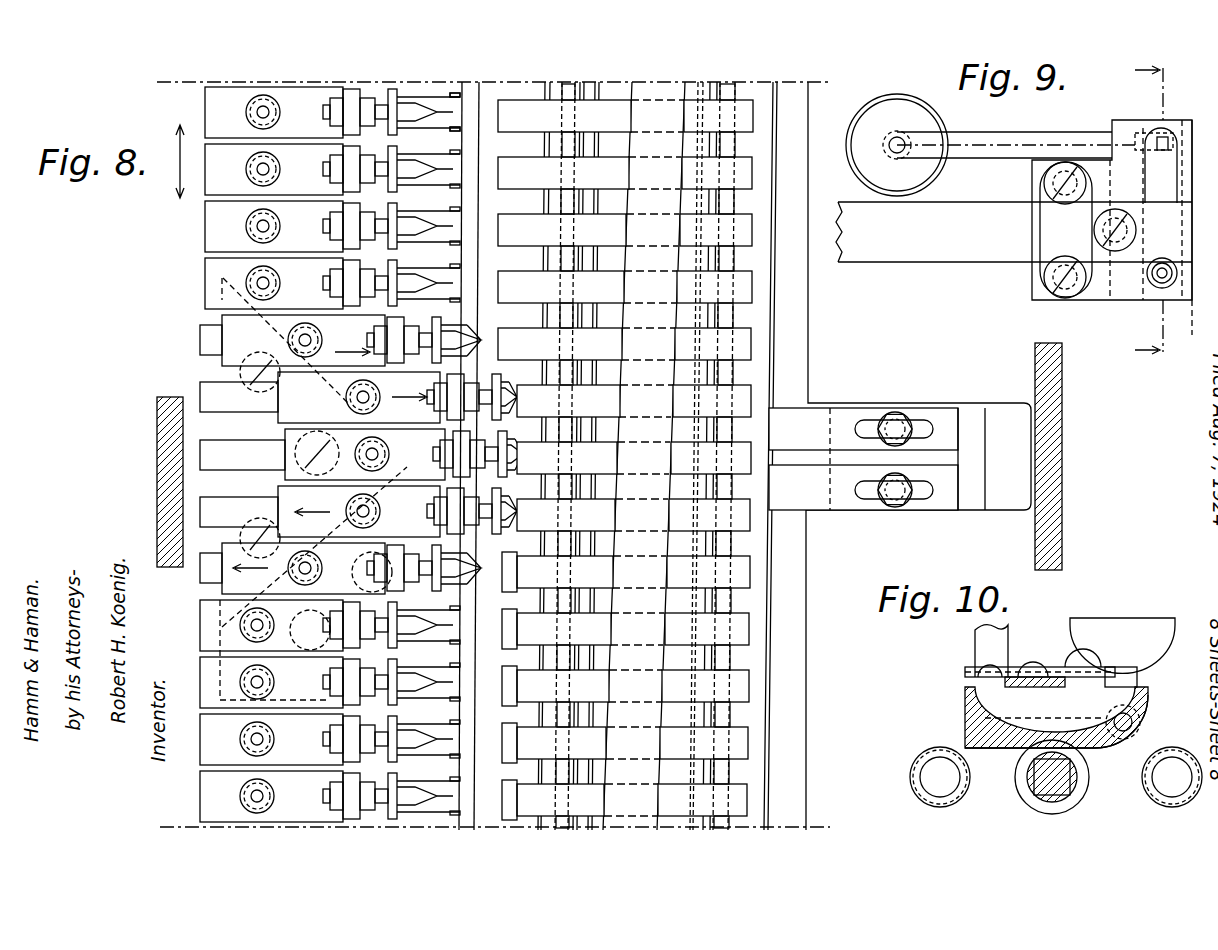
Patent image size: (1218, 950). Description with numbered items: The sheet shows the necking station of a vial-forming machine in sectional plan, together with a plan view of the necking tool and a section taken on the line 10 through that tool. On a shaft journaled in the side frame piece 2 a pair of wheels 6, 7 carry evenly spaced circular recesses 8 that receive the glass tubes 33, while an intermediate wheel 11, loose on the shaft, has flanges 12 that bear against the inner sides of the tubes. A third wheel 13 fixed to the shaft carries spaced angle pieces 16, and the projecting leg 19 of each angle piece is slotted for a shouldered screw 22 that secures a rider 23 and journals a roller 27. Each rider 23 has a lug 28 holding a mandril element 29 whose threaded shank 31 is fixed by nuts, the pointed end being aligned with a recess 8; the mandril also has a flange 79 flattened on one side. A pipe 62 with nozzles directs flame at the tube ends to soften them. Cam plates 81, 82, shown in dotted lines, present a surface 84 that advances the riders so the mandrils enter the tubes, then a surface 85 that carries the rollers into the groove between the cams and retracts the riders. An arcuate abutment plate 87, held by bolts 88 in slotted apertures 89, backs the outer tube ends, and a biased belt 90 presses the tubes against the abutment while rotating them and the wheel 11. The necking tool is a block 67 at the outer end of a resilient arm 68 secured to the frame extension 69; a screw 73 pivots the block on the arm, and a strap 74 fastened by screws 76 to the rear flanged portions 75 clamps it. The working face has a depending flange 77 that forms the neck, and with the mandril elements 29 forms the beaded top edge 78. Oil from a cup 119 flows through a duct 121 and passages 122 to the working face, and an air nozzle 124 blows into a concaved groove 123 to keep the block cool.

In FIG. 8, the side frame piece 2 is at (1035, 390).
In FIG. 8, the wheel 6 is at (760, 90).
In FIG. 8, the wheel 7 is at (582, 88).
In FIG. 8, the circular recess 8 is at (567, 250).
In FIG. 9, the section line 10 is at (1135, 208).
In FIG. 8, the intermediate wheel 11 is at (665, 812).
In FIG. 8, the flange 12 is at (620, 88).
In FIG. 8, the third wheel 13 is at (465, 88).
In FIG. 8, the angle piece 16 is at (450, 135).
In FIG. 8, the projecting leg 19 is at (410, 97).
In FIG. 10, the projecting leg 19 is at (1045, 810).
In FIG. 8, the shouldered screw 22 is at (266, 110).
In FIG. 8, the rider 23 is at (205, 113).
In FIG. 8, the roller 27 is at (235, 796).
In FIG. 8, the lug 28 is at (352, 187).
In FIG. 8, the mandril element 29 is at (425, 226).
In FIG. 10, the mandril element 29 is at (1035, 790).
In FIG. 8, the shank 31 is at (325, 170).
In FIG. 8, the glass tube 33 is at (625, 458).
In FIG. 10, the glass tube 33 is at (930, 800).
In FIG. 8, the pipe 62 is at (485, 88).
In FIG. 9, the block 67 is at (1115, 290).
In FIG. 10, the block 67 is at (1105, 750).
In FIG. 9, the resilient arm 68 is at (918, 262).
In FIG. 10, the resilient arm 68 is at (1045, 687).
In FIG. 8, the frame extension 69 is at (157, 440).
In FIG. 9, the screw 73 is at (1137, 230).
In FIG. 9, the strap 74 is at (1040, 224).
In FIG. 10, the strap 74 is at (965, 669).
In FIG. 9, the rear flanged portion 75 is at (1040, 302).
In FIG. 10, the rear flanged portion 75 is at (975, 730).
In FIG. 9, the screw 76 is at (1045, 182).
In FIG. 10, the screw 76 is at (980, 662).
In FIG. 9, the depending flange 77 is at (1175, 318).
In FIG. 10, the depending flange 77 is at (1008, 750).
In FIG. 8, the beaded top edge 78 is at (508, 520).
In FIG. 10, the beaded top edge 78 is at (920, 800).
In FIG. 8, the flange 79 is at (497, 395).
In FIG. 8, the cam plate 81 is at (235, 371).
In FIG. 8, the cam plate 82 is at (270, 660).
In FIG. 8, the cam surface 84 is at (315, 270).
In FIG. 8, the cam surface 85 is at (408, 470).
In FIG. 8, the arcuate abutment plate 87 is at (798, 90).
In FIG. 8, the bolt 88 is at (897, 412).
In FIG. 8, the slotted aperture 89 is at (925, 415).
In FIG. 8, the belt 90 is at (690, 86).
In FIG. 9, the oil cup 119 is at (897, 94).
In FIG. 9, the duct 121 is at (980, 150).
In FIG. 10, the duct 121 is at (1137, 672).
In FIG. 9, the passage 122 is at (1165, 135).
In FIG. 10, the passage 122 is at (1135, 728).
In FIG. 9, the concaved groove 123 is at (1163, 165).
In FIG. 10, the concaved groove 123 is at (1015, 702).
In FIG. 9, the air nozzle 124 is at (1155, 290).
In FIG. 10, the air nozzle 124 is at (1000, 630).